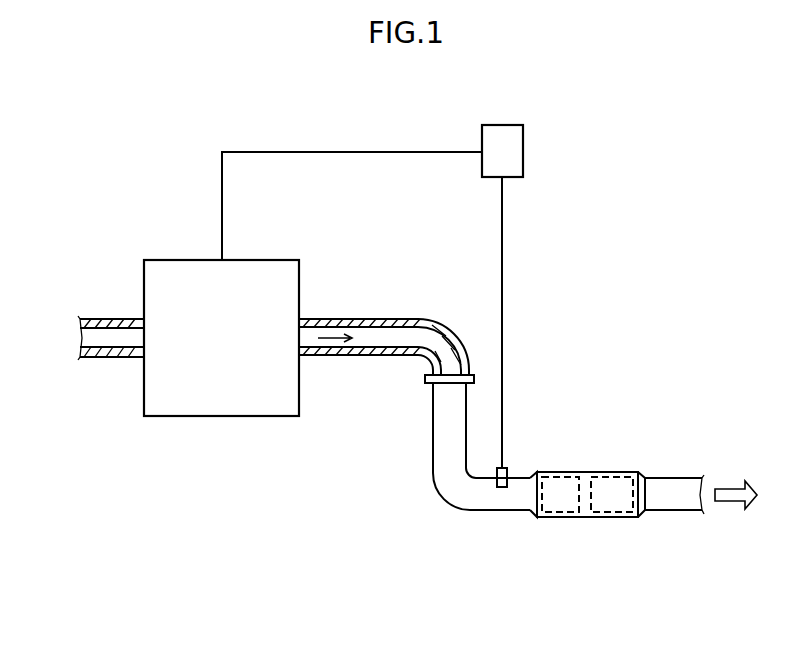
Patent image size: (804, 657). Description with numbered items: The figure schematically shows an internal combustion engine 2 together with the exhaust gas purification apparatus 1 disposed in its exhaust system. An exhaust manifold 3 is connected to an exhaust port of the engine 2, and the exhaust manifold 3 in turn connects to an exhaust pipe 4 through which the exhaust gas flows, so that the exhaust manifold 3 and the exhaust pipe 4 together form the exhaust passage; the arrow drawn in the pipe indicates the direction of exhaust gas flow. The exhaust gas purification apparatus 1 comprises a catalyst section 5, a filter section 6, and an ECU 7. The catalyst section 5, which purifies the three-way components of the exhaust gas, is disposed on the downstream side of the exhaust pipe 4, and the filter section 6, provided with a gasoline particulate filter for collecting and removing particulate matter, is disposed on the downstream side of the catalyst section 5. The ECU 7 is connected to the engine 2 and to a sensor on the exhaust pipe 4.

The exhaust gas purification apparatus 1 is at (616, 498).
The internal combustion engine 2 is at (283, 249).
The exhaust manifold 3 is at (388, 318).
The exhaust pipe 4 is at (432, 424).
The catalyst section 5 is at (562, 470).
The filter section 6 is at (613, 470).
The ECU 7 is at (523, 140).